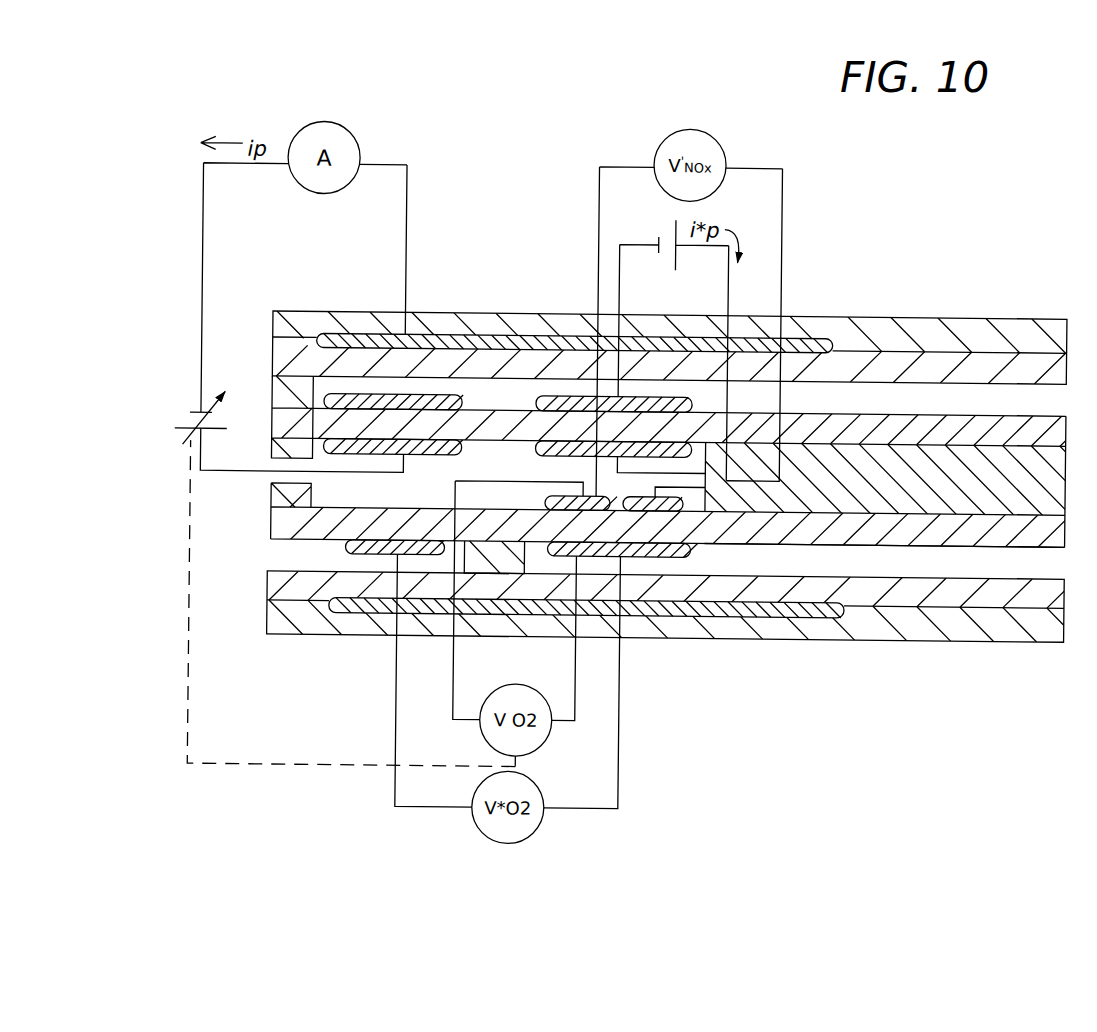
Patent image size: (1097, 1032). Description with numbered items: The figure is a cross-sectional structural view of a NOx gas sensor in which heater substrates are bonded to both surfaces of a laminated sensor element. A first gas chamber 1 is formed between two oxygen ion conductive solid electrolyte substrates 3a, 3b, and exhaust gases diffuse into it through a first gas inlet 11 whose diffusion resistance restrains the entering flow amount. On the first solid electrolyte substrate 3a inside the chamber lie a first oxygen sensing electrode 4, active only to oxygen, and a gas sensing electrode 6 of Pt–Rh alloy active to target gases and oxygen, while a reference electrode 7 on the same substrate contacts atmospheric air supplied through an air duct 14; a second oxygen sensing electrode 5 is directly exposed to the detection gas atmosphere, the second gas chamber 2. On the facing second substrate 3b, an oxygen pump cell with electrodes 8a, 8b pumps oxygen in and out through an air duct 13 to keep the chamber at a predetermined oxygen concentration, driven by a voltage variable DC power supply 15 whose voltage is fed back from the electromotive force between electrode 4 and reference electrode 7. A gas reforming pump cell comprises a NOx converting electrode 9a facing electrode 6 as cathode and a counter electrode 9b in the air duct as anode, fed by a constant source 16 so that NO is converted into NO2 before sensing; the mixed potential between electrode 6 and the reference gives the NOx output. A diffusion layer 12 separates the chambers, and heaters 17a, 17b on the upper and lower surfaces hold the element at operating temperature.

The first gas chamber 1 is at (327, 511).
The second gas chamber 2 is at (315, 560).
The first oxygen ion conductive solid electrolyte substrate 3a is at (958, 537).
The second oxygen ion conductive solid electrolyte substrate 3b is at (931, 433).
The first oxygen sensing electrode 4 is at (555, 492).
The second oxygen sensing electrode 5 is at (380, 554).
The gas sensing electrode 6 is at (670, 508).
The reference electrode 7 is at (560, 556).
The oxygen pump cell electrode 8a is at (354, 432).
The oxygen pump cell electrode 8b is at (388, 379).
The gas reforming electrode 9a is at (578, 430).
The gas reforming counter electrode 9b is at (581, 389).
The first gas inlet 11 is at (366, 482).
The diffusion resistance layer 12 is at (341, 556).
The air duct 13 is at (881, 400).
The air duct 14 is at (851, 556).
The voltage variable-type DC power supply 15 is at (188, 403).
The constant current source 16 is at (637, 229).
The heater 17a is at (788, 613).
The heater 17b is at (803, 330).